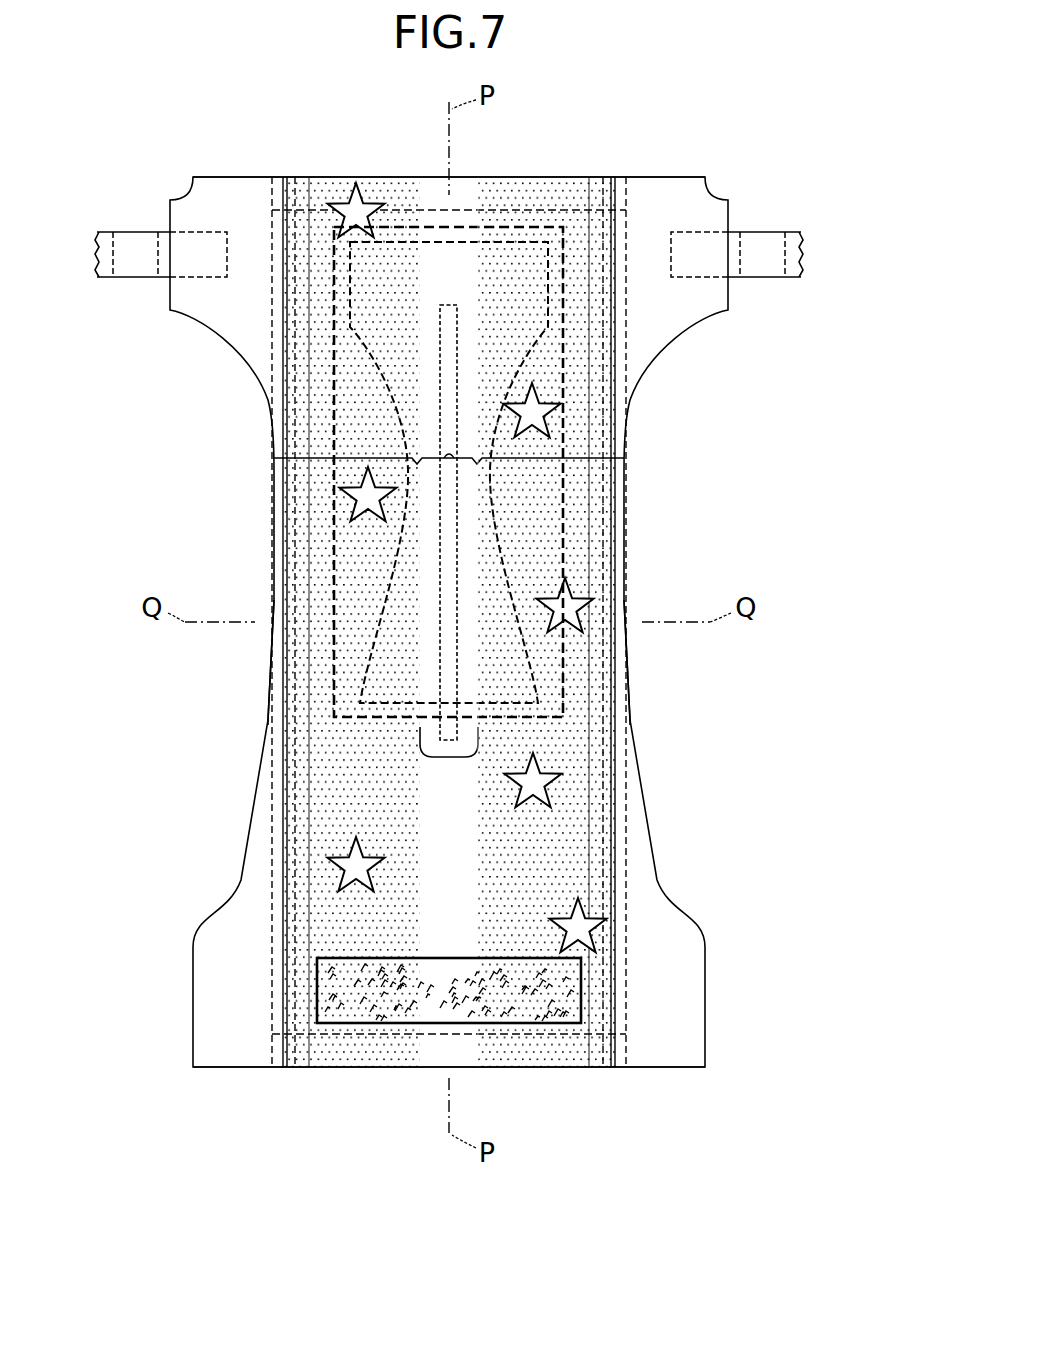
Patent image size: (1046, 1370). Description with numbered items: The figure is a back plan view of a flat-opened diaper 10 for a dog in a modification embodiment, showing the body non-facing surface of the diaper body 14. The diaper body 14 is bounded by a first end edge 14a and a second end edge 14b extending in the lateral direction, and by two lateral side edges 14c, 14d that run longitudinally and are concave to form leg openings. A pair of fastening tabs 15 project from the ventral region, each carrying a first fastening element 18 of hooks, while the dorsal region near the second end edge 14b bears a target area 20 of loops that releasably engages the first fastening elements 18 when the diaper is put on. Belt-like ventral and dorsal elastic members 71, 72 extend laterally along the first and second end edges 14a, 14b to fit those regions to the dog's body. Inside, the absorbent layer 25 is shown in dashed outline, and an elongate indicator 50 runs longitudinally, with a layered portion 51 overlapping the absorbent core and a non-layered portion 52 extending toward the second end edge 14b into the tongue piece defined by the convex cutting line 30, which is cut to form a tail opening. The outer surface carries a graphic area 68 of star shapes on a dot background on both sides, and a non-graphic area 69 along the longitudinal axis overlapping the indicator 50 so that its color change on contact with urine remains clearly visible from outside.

The diaper 10 is at (705, 121).
The diaper body 14 is at (664, 332).
The first end edge 14a is at (551, 177).
The second end edge 14b is at (518, 1068).
The lateral side edge 14c is at (268, 740).
The lateral side edge 14d is at (630, 728).
The fastening tab 15 is at (134, 230).
The first fastening element 18 is at (140, 262).
The target area 20 is at (588, 982).
The absorbent layer 25 is at (473, 492).
The cutting line 30 is at (447, 758).
The indicator 50 is at (447, 577).
The layered portion 51 is at (440, 543).
The non-layered portion 52 is at (447, 708).
The graphic area 68 is at (352, 458).
The non-graphic area 69 is at (448, 457).
The ventral elastic member 71 is at (432, 190).
The dorsal elastic member 72 is at (375, 1050).